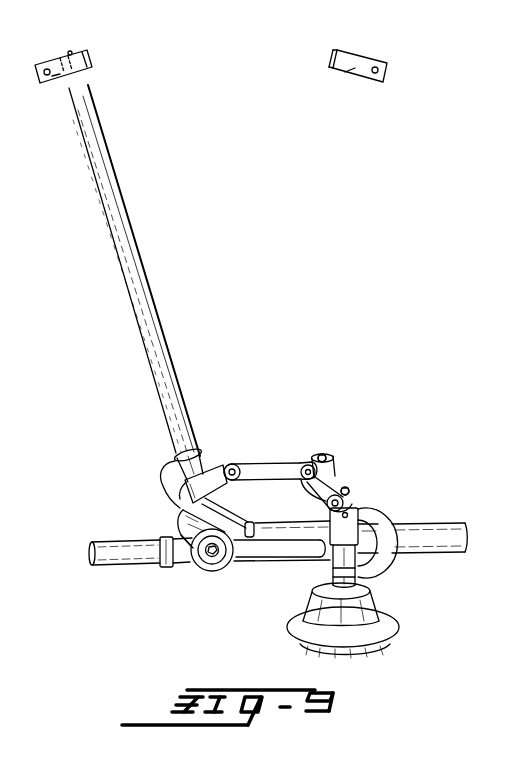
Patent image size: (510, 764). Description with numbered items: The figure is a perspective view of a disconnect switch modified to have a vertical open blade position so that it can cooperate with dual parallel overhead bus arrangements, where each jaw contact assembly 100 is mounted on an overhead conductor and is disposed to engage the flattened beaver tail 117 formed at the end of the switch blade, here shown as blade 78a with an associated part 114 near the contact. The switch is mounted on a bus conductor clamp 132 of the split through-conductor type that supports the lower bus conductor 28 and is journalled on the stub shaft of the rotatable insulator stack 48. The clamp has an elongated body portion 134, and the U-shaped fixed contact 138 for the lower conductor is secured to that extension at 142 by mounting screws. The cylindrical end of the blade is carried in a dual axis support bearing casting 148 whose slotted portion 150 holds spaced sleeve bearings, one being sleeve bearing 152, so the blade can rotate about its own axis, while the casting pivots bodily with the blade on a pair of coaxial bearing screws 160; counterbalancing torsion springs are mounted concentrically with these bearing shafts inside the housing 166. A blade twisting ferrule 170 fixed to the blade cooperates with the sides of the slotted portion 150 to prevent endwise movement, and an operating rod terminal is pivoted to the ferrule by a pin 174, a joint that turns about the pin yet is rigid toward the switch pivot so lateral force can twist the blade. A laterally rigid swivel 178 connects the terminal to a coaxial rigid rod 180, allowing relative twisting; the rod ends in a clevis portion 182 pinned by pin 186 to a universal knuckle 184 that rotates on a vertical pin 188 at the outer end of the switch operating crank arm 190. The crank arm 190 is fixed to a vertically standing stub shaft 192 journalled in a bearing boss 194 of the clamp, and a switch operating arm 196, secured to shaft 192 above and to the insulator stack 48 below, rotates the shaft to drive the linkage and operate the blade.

The jaw contact assembly 100 is at (45, 52).
The beaver tail 117 is at (84, 37).
The bracket plate 114 is at (56, 79).
The handle shaft 78a is at (146, 318).
The dual axis support bearing casting 148 is at (196, 432).
The sleeve bearing 152 is at (172, 458).
The slotted portion 150 is at (164, 507).
The blade twisting ferrule 170 is at (199, 463).
The pin 174 is at (233, 463).
The swivel 178 is at (243, 463).
The rigid rod 180 is at (282, 453).
The pin 186 is at (297, 458).
The universal knuckle 184 is at (333, 474).
The vertical pin 188 is at (322, 452).
The switch operating crank arm 190 is at (333, 483).
The stub shaft 192 is at (350, 495).
The clevis portion 182 is at (293, 483).
The switch operating arm 196 is at (366, 576).
The bearing boss 194 is at (386, 529).
The lower bus conductor 28 is at (111, 561).
The bus conductor clamp 132 is at (167, 568).
The elongated body portion 134 is at (278, 553).
The bearing screws 160 is at (211, 555).
The housing 166 is at (200, 568).
The fixed contact 138 is at (234, 512).
The mounting location 142 is at (253, 518).
The rotatable insulator stack 48 is at (378, 602).